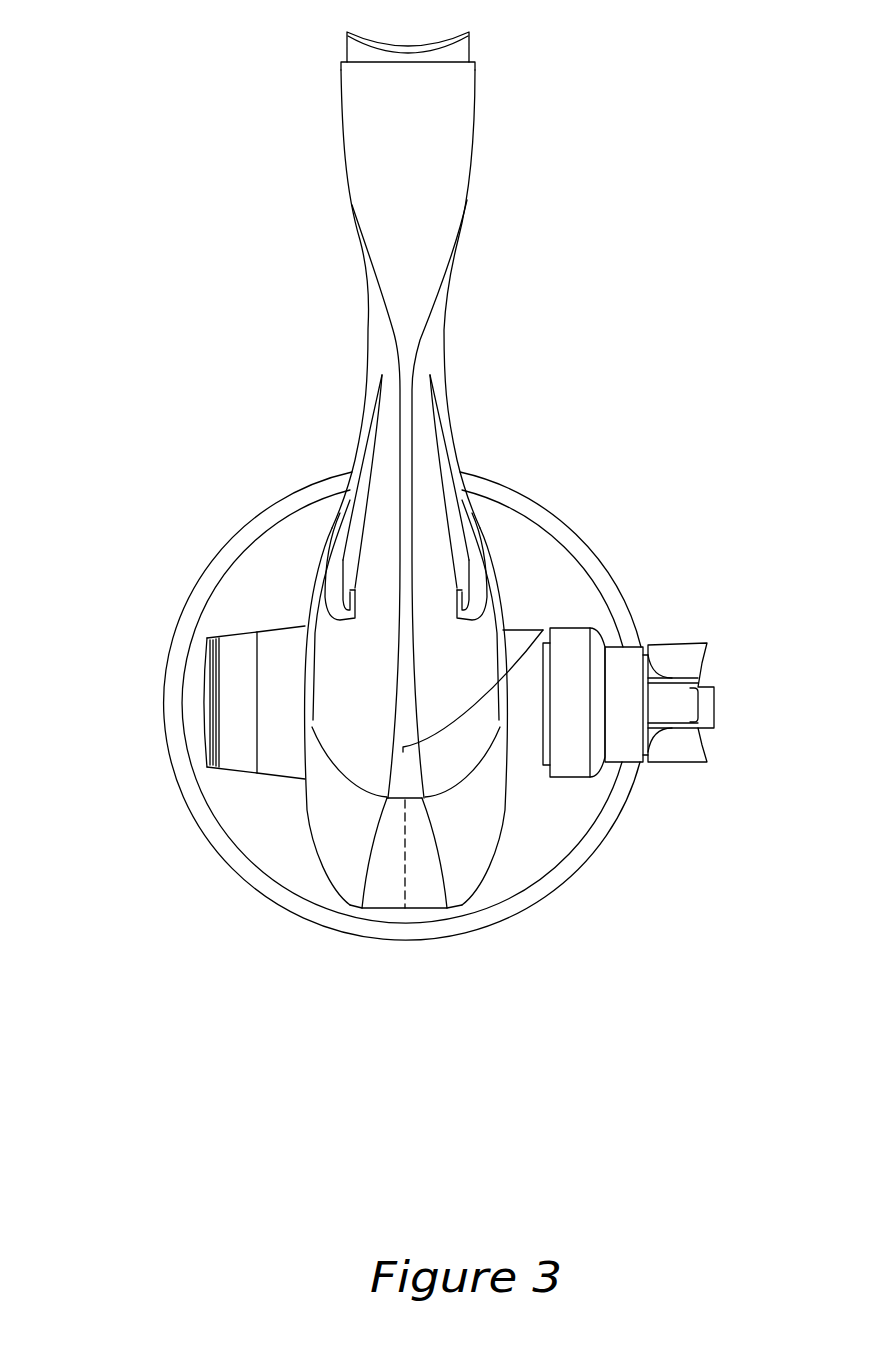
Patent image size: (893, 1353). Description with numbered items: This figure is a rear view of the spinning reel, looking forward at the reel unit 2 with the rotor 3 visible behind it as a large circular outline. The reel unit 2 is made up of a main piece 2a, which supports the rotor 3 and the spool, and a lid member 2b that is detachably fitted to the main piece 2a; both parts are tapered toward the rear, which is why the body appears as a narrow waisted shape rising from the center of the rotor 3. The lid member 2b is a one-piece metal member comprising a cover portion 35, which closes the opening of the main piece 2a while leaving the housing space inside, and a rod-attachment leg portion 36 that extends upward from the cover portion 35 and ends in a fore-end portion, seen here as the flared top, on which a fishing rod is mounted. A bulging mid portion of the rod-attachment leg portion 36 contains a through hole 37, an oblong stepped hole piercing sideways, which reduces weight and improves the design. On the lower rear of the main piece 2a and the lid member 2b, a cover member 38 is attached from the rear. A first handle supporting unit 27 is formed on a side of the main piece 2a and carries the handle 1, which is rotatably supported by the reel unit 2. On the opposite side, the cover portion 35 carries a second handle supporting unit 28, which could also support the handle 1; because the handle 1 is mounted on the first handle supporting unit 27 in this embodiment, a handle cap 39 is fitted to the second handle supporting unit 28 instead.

The handle 1 is at (687, 623).
The reel unit 2 is at (513, 213).
The main piece 2a is at (490, 702).
The lid member 2b is at (357, 326).
The rotor 3 is at (538, 504).
The first handle supporting unit 27 is at (528, 762).
The second handle supporting unit 28 is at (276, 757).
The cover portion 35 is at (338, 640).
The rod-attachment leg portion 36 is at (367, 140).
The through hole 37 is at (353, 533).
The cover member 38 is at (345, 838).
The handle cap 39 is at (237, 670).